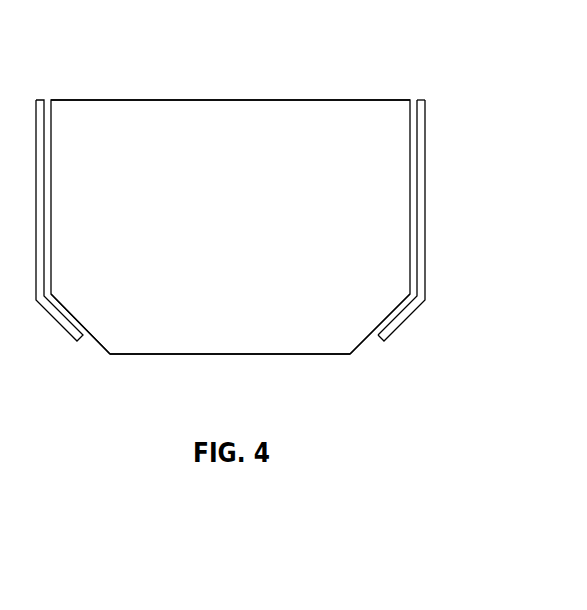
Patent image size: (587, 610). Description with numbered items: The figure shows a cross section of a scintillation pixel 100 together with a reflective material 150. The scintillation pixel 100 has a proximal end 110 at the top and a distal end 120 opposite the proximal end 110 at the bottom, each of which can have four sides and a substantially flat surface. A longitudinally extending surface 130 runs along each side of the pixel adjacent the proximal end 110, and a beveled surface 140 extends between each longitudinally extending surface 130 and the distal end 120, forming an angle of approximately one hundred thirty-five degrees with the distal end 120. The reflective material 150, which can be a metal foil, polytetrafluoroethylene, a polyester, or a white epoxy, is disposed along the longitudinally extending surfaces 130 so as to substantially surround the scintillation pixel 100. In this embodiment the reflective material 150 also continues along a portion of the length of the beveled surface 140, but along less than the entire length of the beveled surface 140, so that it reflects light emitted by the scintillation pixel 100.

The scintillation pixel 100 is at (185, 113).
The proximal end 110 is at (293, 100).
The distal end 120 is at (270, 355).
The longitudinally extending surface 130 is at (410, 128).
The reflective material 150 is at (422, 180).
The beveled surface 140 is at (360, 347).